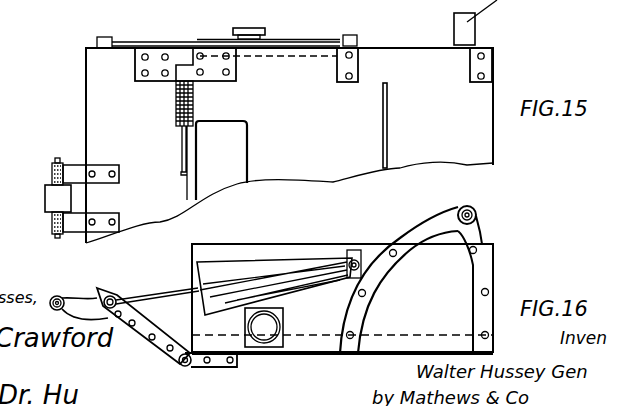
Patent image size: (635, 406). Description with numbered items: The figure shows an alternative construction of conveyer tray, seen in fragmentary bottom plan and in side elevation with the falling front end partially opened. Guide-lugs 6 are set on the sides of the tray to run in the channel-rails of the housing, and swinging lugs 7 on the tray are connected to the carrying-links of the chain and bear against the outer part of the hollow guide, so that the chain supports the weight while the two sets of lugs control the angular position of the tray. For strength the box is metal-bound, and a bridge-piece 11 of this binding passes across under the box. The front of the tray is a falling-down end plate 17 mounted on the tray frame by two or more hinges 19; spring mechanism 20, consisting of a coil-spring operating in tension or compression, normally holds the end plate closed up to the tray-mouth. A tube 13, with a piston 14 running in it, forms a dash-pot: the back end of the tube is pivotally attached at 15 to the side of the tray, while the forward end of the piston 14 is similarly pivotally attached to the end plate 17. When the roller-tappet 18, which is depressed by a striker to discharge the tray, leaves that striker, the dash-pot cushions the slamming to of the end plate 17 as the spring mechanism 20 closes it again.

In FIG. 15, the guide-lugs 6 is at (252, 27).
In FIG. 16, the guide-lugs 6 is at (272, 328).
In FIG. 16, the swinging lugs 7 is at (470, 205).
In FIG. 16, the bridge-piece 11 is at (410, 226).
In FIG. 16, the tube 13 is at (245, 276).
In FIG. 16, the piston 14 is at (117, 280).
In FIG. 16, the pivotal attachment 15 is at (353, 260).
In FIG. 15, the falling-down end plate 17 is at (114, 145).
In FIG. 16, the falling-down end plate 17 is at (157, 350).
In FIG. 16, the roller-tappet 18 is at (62, 283).
In FIG. 15, the hinges 19 is at (173, 53).
In FIG. 16, the hinges 19 is at (220, 366).
In FIG. 15, the spring mechanism 20 is at (196, 101).